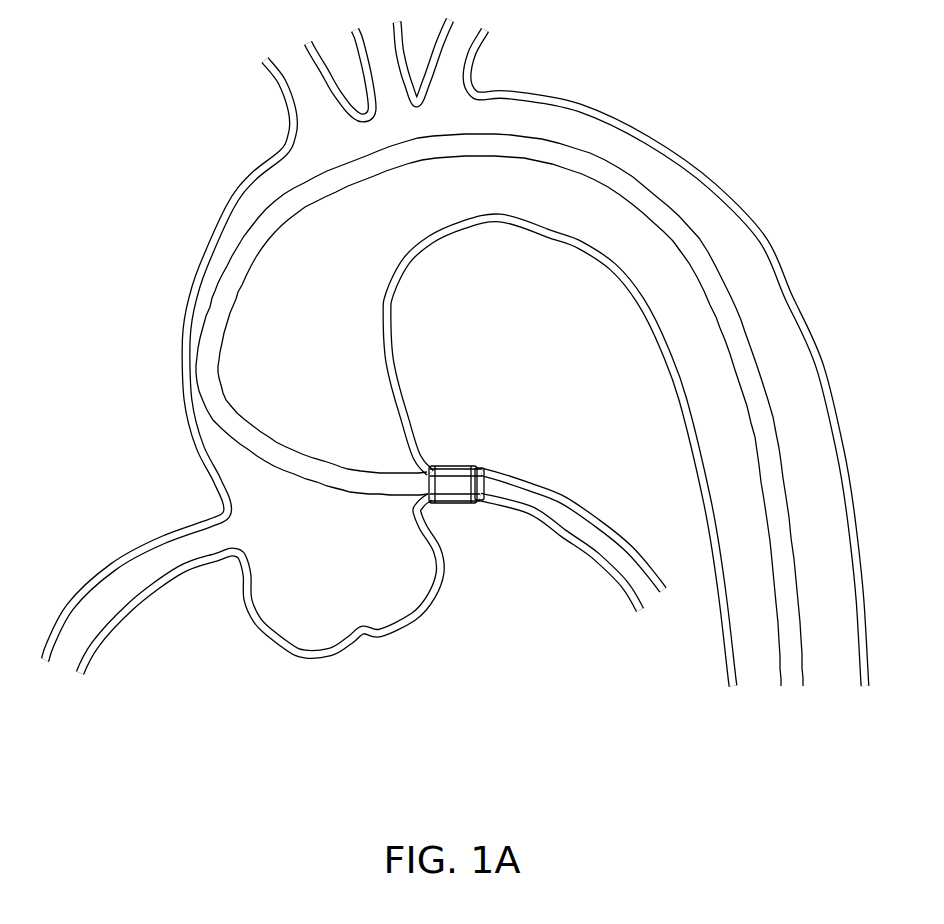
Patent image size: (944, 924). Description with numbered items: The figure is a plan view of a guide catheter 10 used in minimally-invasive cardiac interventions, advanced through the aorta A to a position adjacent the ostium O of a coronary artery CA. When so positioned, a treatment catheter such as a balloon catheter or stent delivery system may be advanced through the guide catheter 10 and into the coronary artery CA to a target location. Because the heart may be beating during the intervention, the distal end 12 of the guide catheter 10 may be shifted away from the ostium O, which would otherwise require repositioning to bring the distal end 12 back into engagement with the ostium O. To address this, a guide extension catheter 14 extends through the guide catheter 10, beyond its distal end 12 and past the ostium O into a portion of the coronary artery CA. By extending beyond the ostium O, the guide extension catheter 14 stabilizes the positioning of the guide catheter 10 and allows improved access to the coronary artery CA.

The aorta A is at (640, 157).
The guide catheter 10 is at (723, 283).
The ostium O is at (433, 471).
The guide extension catheter 14 is at (482, 470).
The coronary artery CA is at (543, 510).
The distal end 12 is at (453, 505).